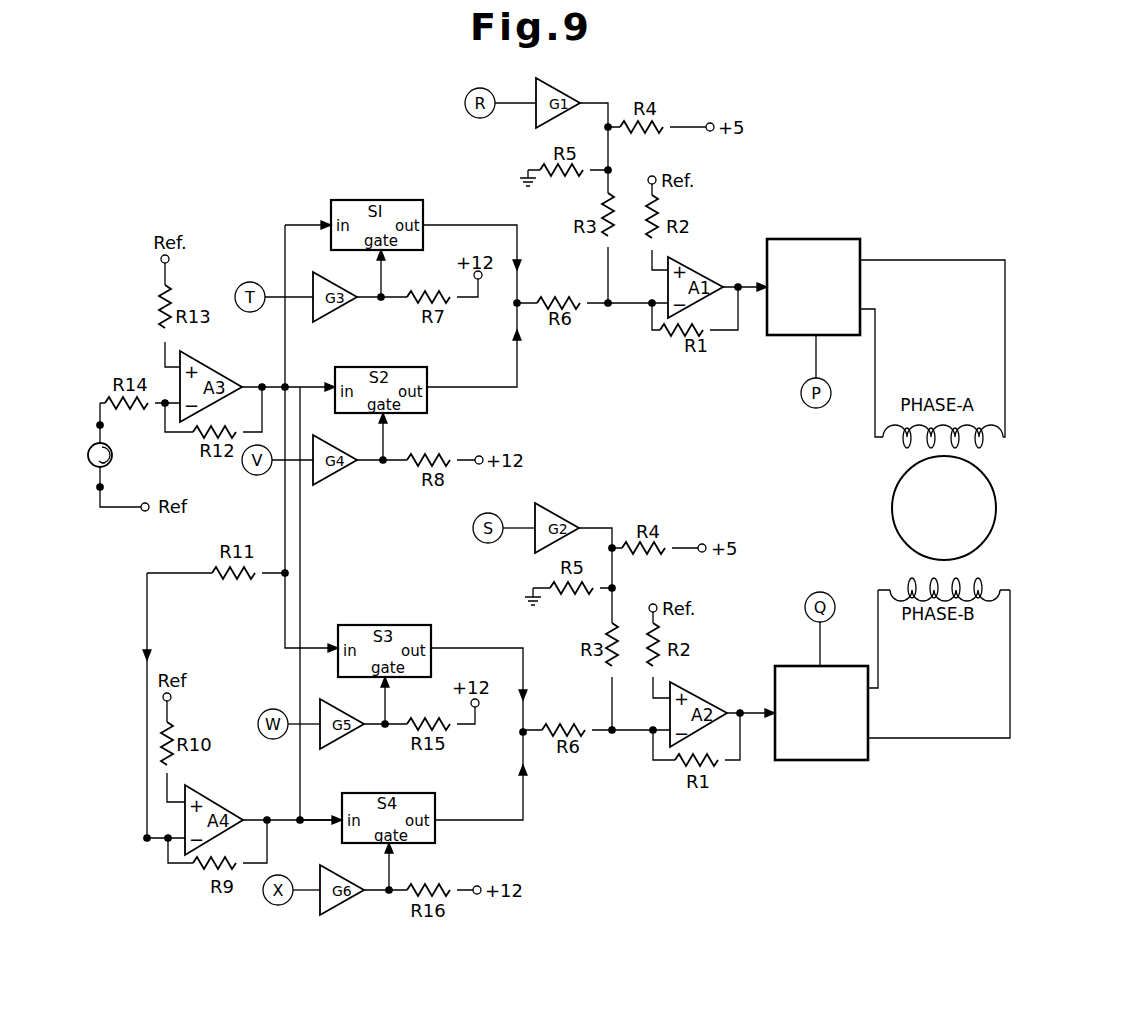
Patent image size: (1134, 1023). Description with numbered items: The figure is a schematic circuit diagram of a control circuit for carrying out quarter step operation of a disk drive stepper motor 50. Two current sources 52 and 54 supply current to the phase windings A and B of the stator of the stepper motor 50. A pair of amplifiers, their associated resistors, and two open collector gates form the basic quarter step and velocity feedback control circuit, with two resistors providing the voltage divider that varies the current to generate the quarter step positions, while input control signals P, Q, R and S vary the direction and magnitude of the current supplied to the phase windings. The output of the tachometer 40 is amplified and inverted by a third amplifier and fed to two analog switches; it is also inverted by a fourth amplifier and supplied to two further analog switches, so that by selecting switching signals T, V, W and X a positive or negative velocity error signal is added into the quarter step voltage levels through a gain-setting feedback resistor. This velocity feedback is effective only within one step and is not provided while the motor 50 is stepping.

The tachometer 40 is at (93, 468).
The stepper motor 50 is at (892, 508).
The current source 52 is at (830, 239).
The current source 54 is at (842, 760).